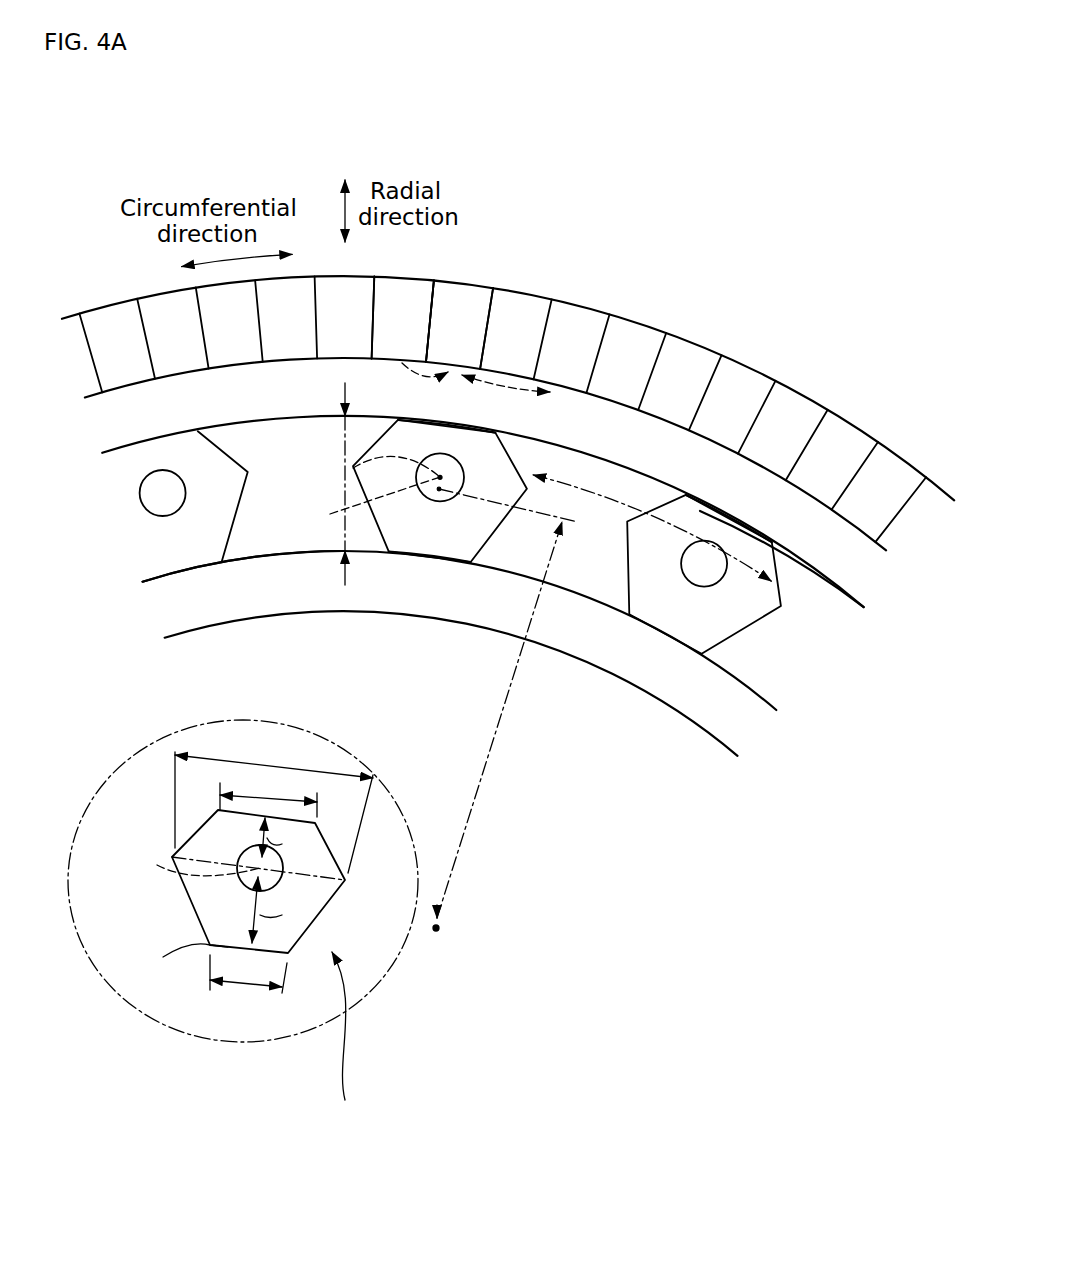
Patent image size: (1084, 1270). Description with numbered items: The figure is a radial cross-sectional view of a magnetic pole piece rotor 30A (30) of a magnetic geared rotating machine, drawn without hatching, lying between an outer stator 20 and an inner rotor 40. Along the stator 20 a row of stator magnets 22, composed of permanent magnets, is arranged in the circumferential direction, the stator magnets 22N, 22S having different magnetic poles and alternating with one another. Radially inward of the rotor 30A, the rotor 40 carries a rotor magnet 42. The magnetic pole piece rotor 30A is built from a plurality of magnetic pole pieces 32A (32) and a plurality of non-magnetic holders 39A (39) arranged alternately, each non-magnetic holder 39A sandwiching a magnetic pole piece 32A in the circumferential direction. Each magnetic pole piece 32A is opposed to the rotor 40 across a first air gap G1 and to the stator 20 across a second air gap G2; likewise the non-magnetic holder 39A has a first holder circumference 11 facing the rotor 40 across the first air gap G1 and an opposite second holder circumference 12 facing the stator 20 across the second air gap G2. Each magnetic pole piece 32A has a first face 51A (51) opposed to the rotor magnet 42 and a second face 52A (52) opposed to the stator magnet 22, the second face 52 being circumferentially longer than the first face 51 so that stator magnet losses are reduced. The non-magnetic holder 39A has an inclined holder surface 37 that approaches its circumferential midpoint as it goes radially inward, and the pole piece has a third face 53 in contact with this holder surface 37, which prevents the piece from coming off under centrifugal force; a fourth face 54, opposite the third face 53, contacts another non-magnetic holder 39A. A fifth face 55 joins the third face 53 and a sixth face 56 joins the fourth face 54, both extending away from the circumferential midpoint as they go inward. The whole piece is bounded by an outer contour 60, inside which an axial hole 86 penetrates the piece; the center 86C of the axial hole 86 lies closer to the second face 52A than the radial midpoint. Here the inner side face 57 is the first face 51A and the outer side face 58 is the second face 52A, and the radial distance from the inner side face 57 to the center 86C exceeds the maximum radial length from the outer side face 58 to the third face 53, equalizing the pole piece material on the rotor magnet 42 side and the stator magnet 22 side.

The first holder circumference 11 is at (283, 558).
The second holder circumference 12 is at (266, 420).
The stator 20 is at (508, 391).
The stator magnet 22 is at (714, 332).
The stator magnet 22N is at (400, 292).
The stator magnet 22S is at (472, 305).
The magnetic pole piece rotor 30 is at (514, 726).
The magnetic pole piece rotor 30A is at (862, 592).
The magnetic pole piece 32 is at (477, 560).
The magnetic pole piece 32A is at (489, 618).
The holder surface 37 is at (388, 443).
The non-magnetic holder 39 is at (262, 532).
The non-magnetic holder 39A is at (460, 621).
The rotor 40 is at (451, 701).
The rotor magnet 42 is at (585, 677).
The first face 51 is at (457, 560).
The first face 51A is at (419, 618).
The second face 52 is at (467, 425).
The second face 52A is at (643, 469).
The third face 53 is at (377, 441).
The fourth face 54 is at (514, 464).
The fifth face 55 is at (420, 498).
The sixth face 56 is at (465, 542).
The inner side face 57 is at (418, 557).
The outer side face 58 is at (440, 421).
The outer contour 60 is at (531, 478).
The axial hole 86 is at (379, 554).
The center of axial hole 86C is at (353, 468).
The first air gap G1 is at (761, 725).
The second air gap G2 is at (858, 551).